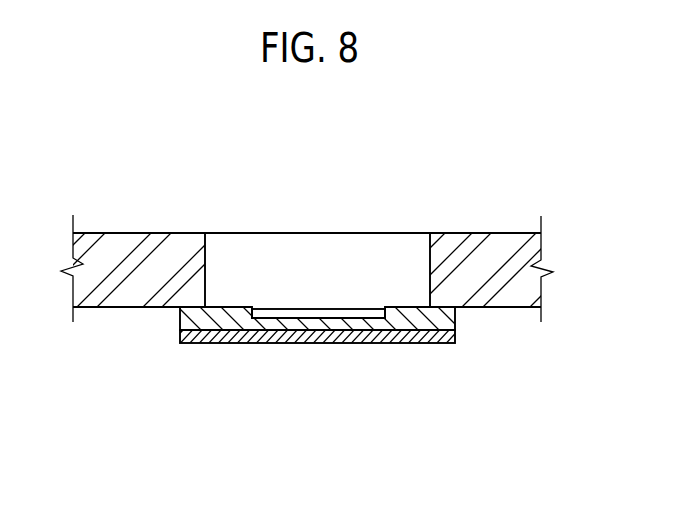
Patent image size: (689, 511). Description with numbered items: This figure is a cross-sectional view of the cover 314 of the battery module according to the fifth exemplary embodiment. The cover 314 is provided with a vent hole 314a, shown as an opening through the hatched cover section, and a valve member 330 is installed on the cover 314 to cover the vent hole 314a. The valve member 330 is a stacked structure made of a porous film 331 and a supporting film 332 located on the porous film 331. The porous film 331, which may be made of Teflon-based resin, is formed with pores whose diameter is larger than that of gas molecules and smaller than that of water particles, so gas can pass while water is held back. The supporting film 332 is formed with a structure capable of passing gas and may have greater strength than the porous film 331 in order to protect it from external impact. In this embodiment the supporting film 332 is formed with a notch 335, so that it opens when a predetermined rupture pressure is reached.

The cover 314 is at (462, 252).
The vent hole 314a is at (355, 232).
The notch 335 is at (285, 315).
The supporting film 332 is at (203, 323).
The porous film 331 is at (277, 333).
The valve member 330 is at (290, 422).